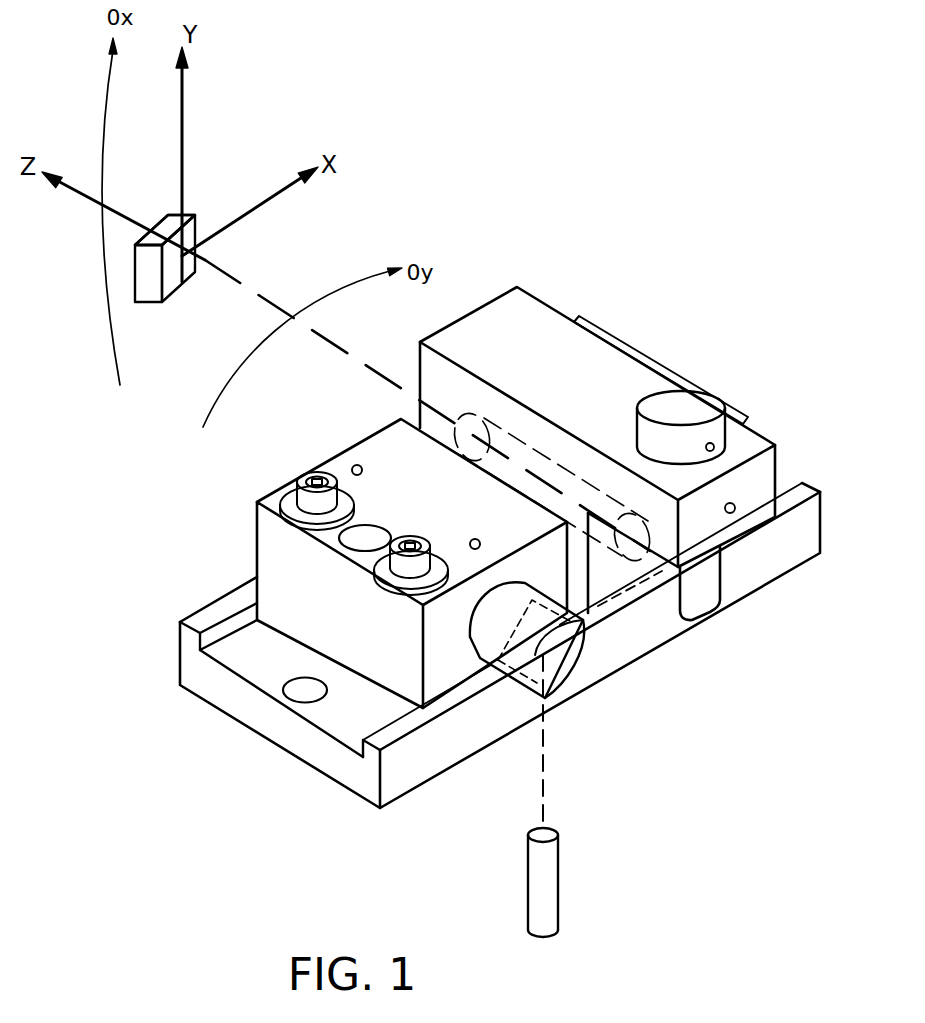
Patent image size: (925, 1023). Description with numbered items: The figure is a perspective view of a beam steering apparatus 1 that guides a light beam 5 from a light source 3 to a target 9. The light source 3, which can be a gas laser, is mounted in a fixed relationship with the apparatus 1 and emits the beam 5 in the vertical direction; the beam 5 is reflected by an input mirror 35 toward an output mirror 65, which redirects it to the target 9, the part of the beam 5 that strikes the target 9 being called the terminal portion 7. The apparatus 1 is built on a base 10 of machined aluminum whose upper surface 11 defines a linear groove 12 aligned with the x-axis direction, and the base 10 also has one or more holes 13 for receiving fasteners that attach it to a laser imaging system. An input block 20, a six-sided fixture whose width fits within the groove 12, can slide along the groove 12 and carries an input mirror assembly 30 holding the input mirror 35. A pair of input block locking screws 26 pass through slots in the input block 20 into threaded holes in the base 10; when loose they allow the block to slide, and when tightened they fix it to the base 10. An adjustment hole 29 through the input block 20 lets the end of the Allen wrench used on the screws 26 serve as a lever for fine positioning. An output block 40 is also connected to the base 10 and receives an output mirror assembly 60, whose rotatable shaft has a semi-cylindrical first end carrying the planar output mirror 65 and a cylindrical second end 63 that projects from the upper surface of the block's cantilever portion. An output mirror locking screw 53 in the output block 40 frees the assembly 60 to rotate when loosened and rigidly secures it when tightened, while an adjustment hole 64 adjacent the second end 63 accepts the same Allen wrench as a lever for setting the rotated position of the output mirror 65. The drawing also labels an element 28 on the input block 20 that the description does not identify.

The apparatus 1 is at (495, 516).
The light source 3 is at (547, 866).
The light beam 5 is at (250, 297).
The terminal portion 7 is at (175, 275).
The target 9 is at (167, 227).
The base 10 is at (790, 552).
The upper surface 11 is at (372, 728).
The groove 12 is at (247, 667).
The holes 13 is at (298, 688).
The input block 20 is at (303, 595).
The input block locking screws 26 is at (407, 535).
The positioning holes 28 is at (472, 540).
The adjustment hole 29 is at (343, 548).
The input mirror assembly 30 is at (477, 635).
The input mirror 35 is at (572, 660).
The output block 40 is at (538, 328).
The output mirror locking screw 53 is at (808, 486).
The output mirror assembly 60 is at (687, 410).
The cylindrical second end 63 is at (633, 348).
The adjustment hole 64 is at (735, 510).
The output mirror 65 is at (680, 605).